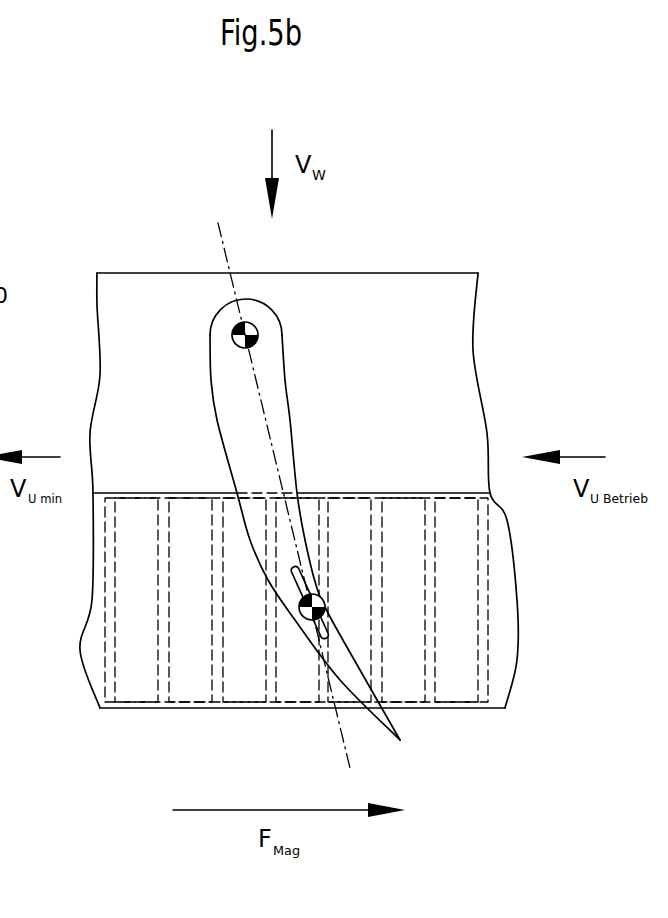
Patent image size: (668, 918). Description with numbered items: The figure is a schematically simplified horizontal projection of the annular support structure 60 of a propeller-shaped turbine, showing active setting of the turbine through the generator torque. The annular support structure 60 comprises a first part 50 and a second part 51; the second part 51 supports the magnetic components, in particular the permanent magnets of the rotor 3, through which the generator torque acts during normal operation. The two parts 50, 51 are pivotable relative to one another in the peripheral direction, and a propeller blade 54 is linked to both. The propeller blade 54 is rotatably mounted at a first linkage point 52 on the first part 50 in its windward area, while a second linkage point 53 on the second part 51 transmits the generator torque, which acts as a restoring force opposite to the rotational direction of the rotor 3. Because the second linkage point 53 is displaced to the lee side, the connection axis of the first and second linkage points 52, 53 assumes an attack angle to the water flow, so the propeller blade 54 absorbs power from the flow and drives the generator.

The rotor 3 is at (133, 652).
The first part 50 is at (457, 310).
The second part 51 is at (498, 680).
The first linkage point 52 is at (237, 320).
The second linkage point 53 is at (300, 617).
The propeller blade 54 is at (268, 471).
The annular support structure 60 is at (63, 358).